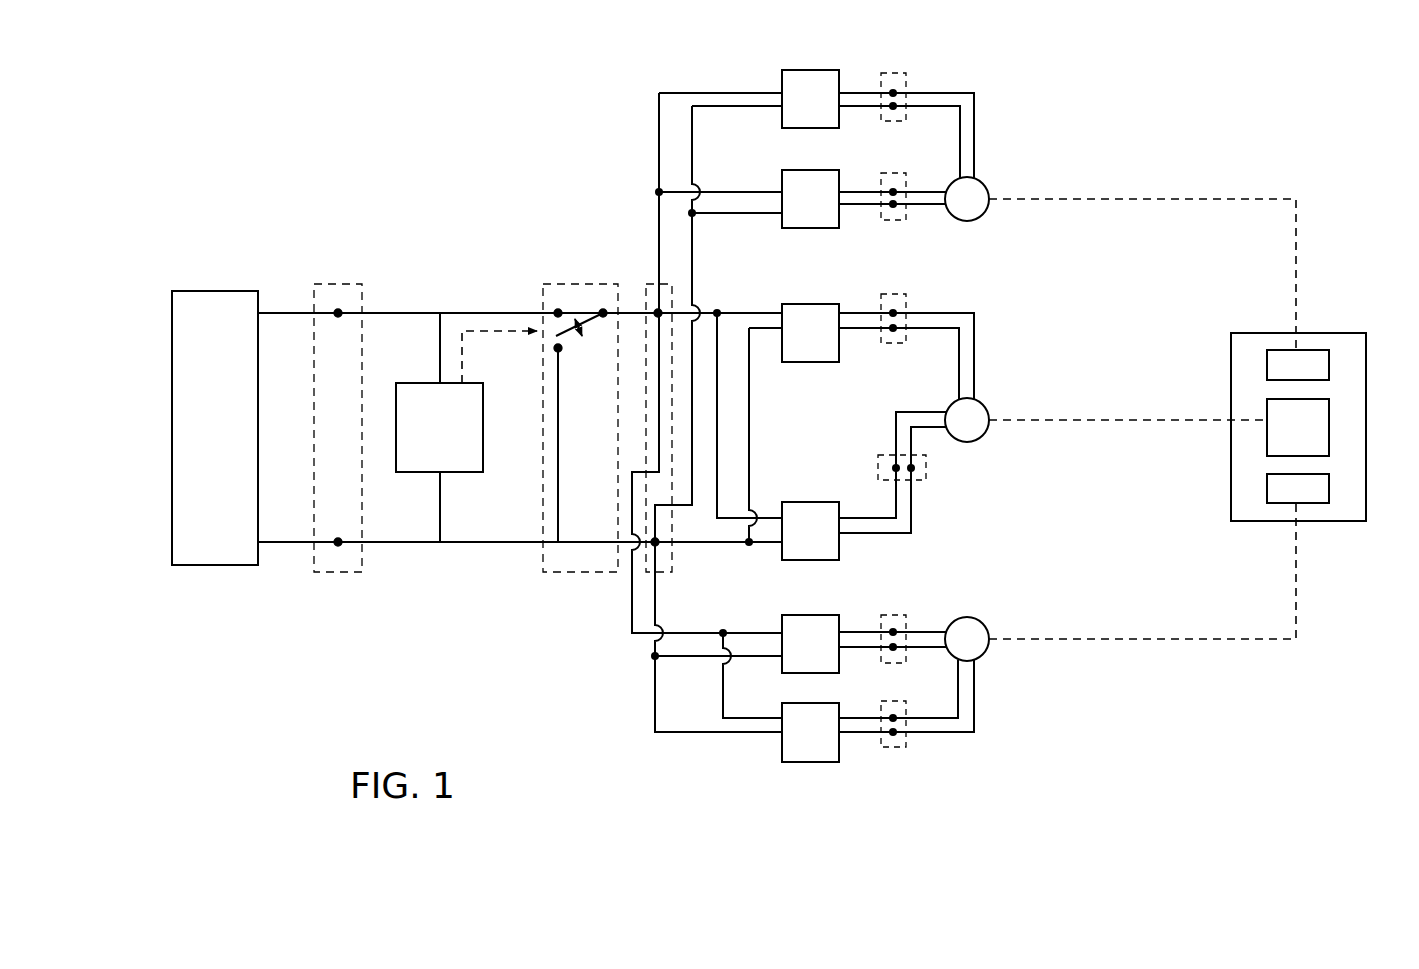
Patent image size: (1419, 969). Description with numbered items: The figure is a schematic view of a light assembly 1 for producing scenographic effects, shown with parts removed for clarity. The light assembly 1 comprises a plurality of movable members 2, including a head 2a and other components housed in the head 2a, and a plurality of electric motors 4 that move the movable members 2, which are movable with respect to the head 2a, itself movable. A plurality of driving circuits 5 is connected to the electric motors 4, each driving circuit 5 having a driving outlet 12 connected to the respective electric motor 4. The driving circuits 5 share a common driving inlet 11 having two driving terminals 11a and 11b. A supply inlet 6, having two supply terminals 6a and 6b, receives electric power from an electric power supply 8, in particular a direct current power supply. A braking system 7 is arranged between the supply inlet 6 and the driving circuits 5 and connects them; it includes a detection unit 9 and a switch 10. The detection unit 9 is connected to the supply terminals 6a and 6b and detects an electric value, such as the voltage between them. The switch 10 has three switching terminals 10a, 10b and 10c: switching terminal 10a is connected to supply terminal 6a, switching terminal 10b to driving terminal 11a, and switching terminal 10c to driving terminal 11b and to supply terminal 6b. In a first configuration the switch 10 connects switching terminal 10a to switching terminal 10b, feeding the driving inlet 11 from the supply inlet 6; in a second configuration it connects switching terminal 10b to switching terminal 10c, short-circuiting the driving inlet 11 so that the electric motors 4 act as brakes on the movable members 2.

The light assembly 1 is at (208, 642).
The movable members 2 is at (1318, 360).
The head 2a is at (1362, 508).
The electric motors 4 is at (982, 208).
The driving circuits 5 is at (806, 70).
The supply inlet 6 is at (340, 283).
The supply terminal 6a is at (340, 311).
The supply terminal 6b is at (339, 547).
The braking system 7 is at (468, 586).
The electric power supply 8 is at (172, 427).
The detection unit 9 is at (420, 383).
The switch 10 is at (578, 282).
The switching terminal 10a is at (555, 311).
The switching terminal 10b is at (604, 310).
The switching terminal 10c is at (560, 351).
The driving inlet 11 is at (668, 576).
The driving terminal 11a is at (657, 302).
The driving terminal 11b is at (660, 546).
The driving outlet 12 is at (895, 71).